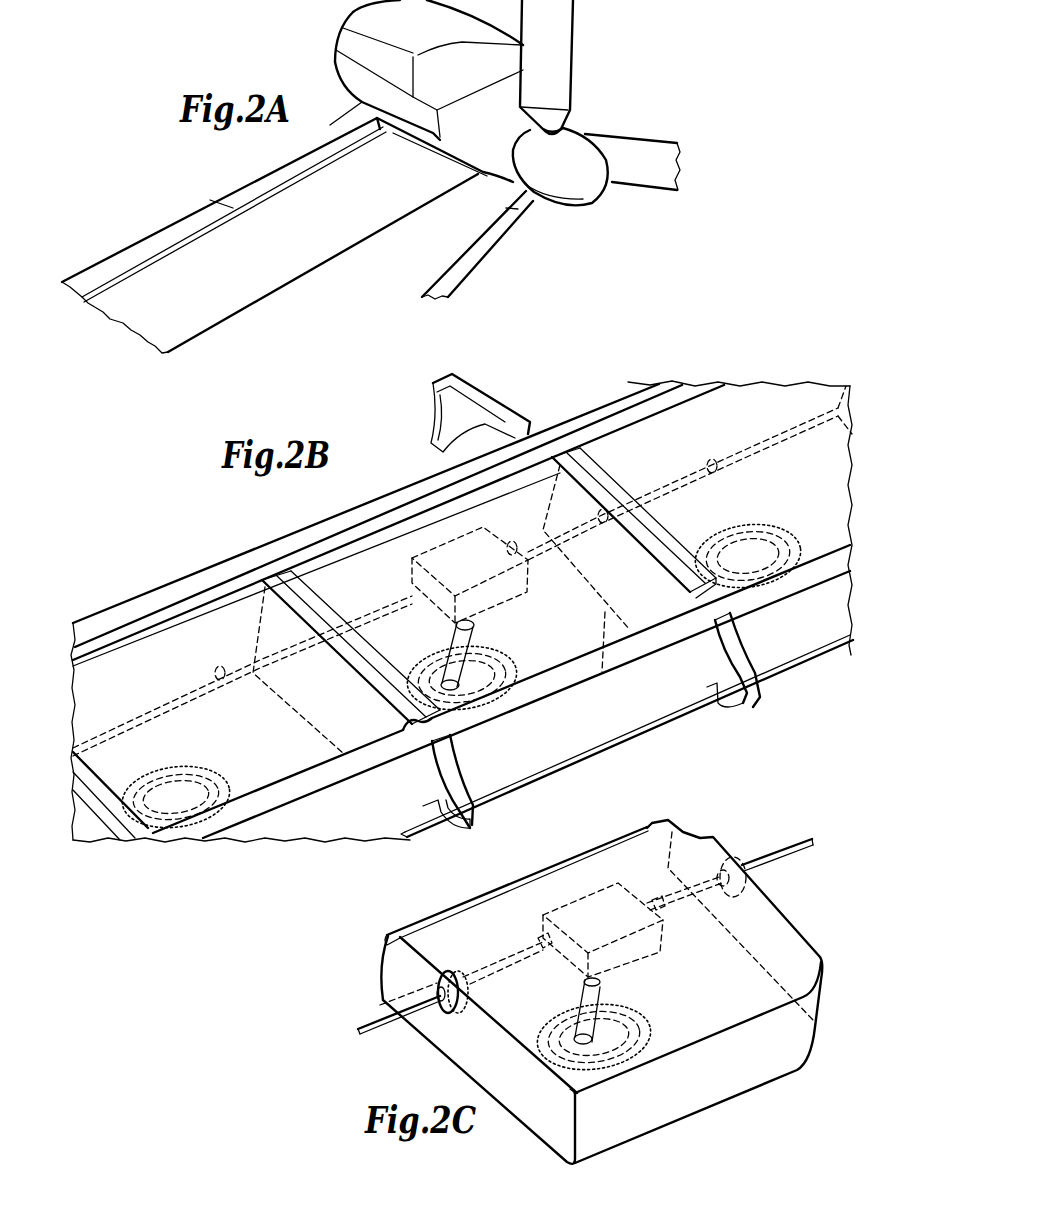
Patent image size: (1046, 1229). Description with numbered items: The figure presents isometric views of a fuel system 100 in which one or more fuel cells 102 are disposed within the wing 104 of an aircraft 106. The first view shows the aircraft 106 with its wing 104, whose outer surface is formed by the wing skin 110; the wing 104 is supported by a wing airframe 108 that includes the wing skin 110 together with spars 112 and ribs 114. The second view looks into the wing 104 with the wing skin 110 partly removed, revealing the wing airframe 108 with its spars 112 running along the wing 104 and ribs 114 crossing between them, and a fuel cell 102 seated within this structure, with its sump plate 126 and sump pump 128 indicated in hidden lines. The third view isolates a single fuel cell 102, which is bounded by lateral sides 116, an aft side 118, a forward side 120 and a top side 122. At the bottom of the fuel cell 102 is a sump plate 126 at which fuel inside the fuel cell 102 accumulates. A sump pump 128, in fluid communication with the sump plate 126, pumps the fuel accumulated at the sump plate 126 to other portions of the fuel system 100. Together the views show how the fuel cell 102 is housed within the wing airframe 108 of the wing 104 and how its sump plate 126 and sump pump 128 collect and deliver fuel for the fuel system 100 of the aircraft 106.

In FIG. 2B, the fuel system 100 is at (171, 520).
In FIG. 2C, the fuel system 100 is at (734, 824).
In FIG. 2B, the fuel cell 102 is at (393, 540).
In FIG. 2C, the fuel cell 102 is at (670, 1127).
In FIG. 2A, the wing 104 is at (173, 227).
In FIG. 2B, the wing 104 is at (120, 605).
In FIG. 2A, the aircraft 106 is at (616, 91).
In FIG. 2A, the wing airframe 108 is at (108, 257).
In FIG. 2B, the wing airframe 108 is at (555, 408).
In FIG. 2A, the wing skin 110 is at (255, 302).
In FIG. 2B, the spars 112 is at (220, 567).
In FIG. 2B, the ribs 114 is at (298, 567).
In FIG. 2B, the lateral sides 116 is at (622, 594).
In FIG. 2C, the lateral sides 116 is at (460, 1045).
In FIG. 2C, the aft side 118 is at (738, 1077).
In FIG. 2B, the forward side 120 is at (337, 568).
In FIG. 2C, the top side 122 is at (769, 924).
In FIG. 2B, the sump plate 126 is at (480, 653).
In FIG. 2C, the sump plate 126 is at (620, 1030).
In FIG. 2B, the sump pump 128 is at (435, 557).
In FIG. 2C, the sump pump 128 is at (600, 915).